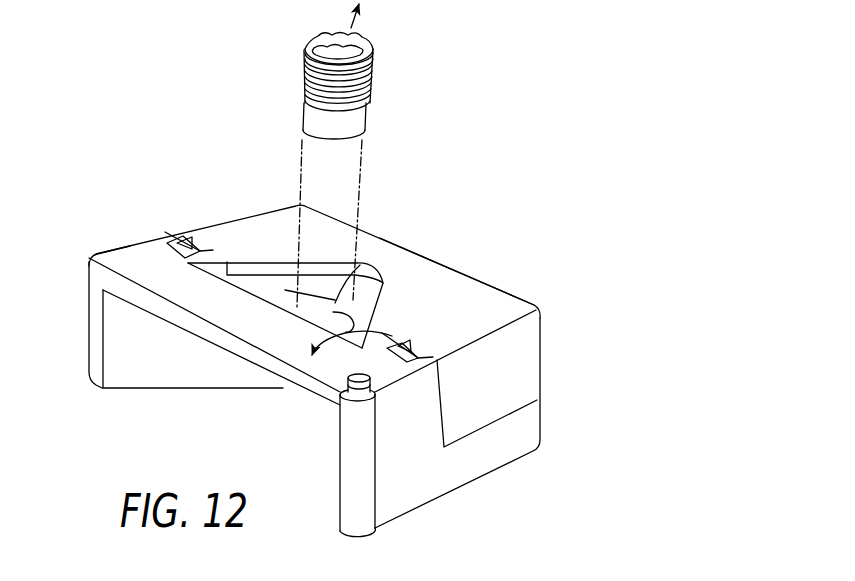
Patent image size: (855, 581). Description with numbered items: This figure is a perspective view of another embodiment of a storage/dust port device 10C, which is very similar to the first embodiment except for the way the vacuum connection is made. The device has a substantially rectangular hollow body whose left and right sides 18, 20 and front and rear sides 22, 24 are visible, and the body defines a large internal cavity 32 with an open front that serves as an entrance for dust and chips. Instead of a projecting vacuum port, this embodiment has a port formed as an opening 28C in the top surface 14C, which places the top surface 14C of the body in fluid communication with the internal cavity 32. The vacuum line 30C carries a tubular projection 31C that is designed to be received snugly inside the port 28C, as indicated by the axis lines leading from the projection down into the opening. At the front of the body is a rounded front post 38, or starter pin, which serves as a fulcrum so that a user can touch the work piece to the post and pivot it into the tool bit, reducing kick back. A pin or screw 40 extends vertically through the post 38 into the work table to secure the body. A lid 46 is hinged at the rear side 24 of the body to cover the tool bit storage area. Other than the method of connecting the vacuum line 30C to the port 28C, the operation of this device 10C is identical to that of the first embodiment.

The storage/dust port device 10C is at (349, 281).
The top surface 14C is at (247, 323).
The left side 18 is at (107, 249).
The right side 20 is at (427, 493).
The front side 22 is at (97, 296).
The rear side 24 is at (483, 283).
The port 28C is at (357, 277).
The vacuum line 30C is at (388, 87).
The tubular projection 31C is at (353, 123).
The cavity 32 is at (154, 313).
The front post 38 is at (352, 498).
The pin or screw 40 is at (340, 393).
The lid 46 is at (510, 335).